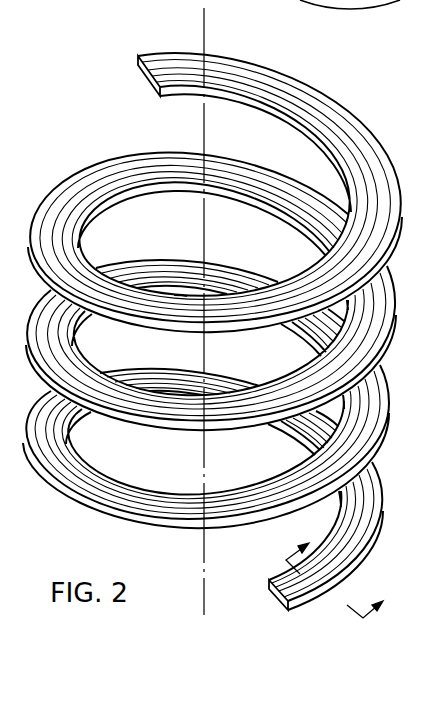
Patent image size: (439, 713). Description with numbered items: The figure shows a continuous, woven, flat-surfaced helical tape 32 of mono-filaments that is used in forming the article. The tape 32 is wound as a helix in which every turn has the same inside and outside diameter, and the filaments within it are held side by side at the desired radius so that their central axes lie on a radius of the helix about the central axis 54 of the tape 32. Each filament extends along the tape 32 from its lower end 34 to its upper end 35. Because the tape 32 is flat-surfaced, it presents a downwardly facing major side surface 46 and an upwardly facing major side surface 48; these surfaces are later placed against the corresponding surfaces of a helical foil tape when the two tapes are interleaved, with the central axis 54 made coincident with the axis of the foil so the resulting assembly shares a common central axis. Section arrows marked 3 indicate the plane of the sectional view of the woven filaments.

The central axis 54 is at (203, 37).
The upper end 35 is at (139, 62).
The helical tape 32 is at (352, 102).
The downwardly facing major side surface 46 is at (82, 497).
The upwardly facing major side surface 48 is at (356, 550).
The lower end 34 is at (276, 598).
The section line 3- 3 is at (340, 577).